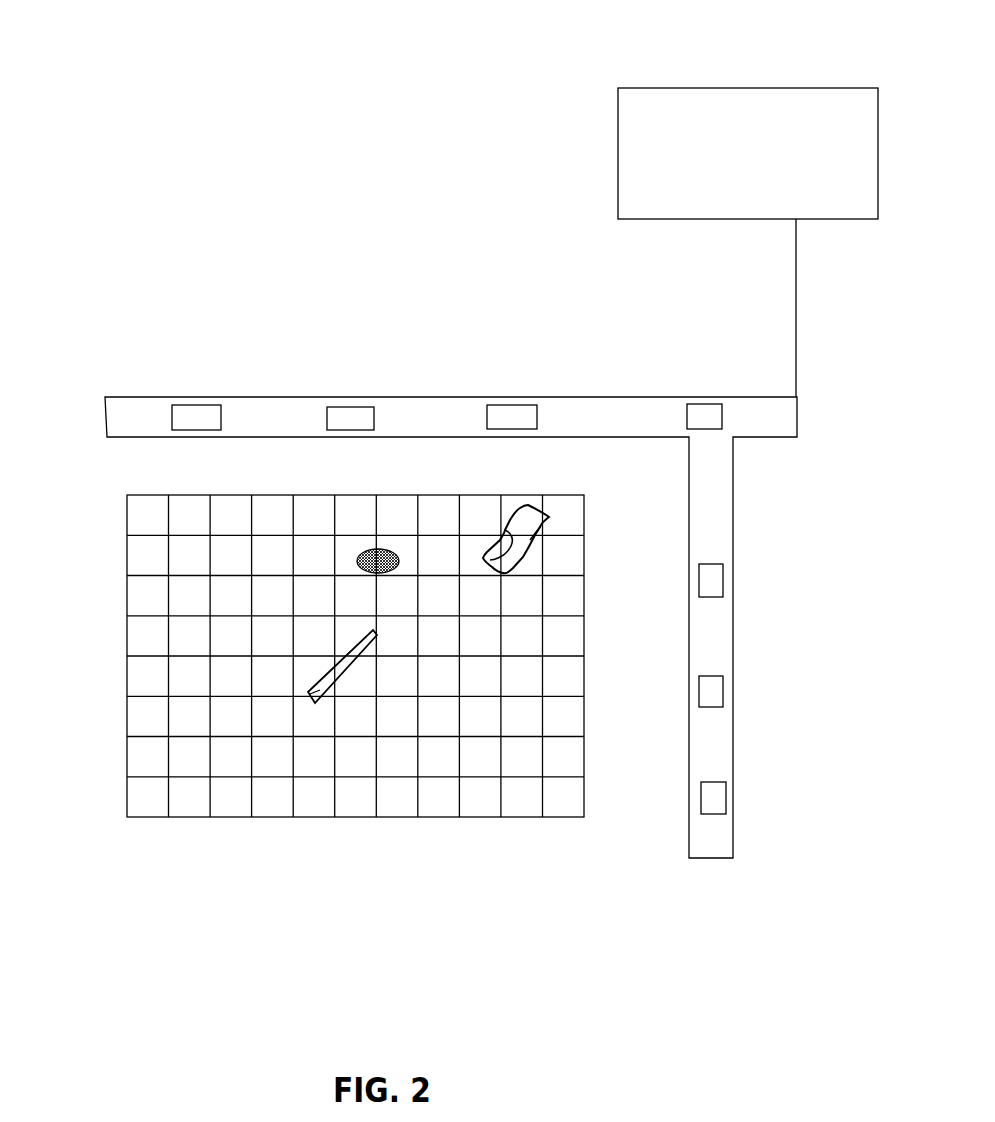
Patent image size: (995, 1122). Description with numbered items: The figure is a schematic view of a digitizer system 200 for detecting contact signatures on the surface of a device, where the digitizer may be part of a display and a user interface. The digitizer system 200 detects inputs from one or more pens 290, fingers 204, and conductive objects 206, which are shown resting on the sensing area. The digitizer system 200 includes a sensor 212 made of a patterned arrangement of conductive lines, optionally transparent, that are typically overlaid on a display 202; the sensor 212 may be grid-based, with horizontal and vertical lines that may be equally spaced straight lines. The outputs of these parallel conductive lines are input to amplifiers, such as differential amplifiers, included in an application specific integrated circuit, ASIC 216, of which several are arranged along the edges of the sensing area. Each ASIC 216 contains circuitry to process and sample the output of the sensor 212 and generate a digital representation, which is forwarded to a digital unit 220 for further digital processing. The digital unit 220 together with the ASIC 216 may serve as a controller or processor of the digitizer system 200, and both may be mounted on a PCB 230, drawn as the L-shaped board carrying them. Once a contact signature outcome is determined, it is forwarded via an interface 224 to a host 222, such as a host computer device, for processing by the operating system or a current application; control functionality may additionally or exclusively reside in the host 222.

The digitizer system 200 is at (152, 53).
The display 202 is at (336, 679).
The finger 204 is at (520, 545).
The conductive object 206 is at (357, 562).
The sensor 212 is at (157, 823).
The application specific integrated circuit (ASIC) 216 is at (186, 402).
The digital unit 220 is at (722, 417).
The host 222 is at (643, 172).
The interface 224 is at (797, 296).
The PCB 230 is at (293, 400).
The pen 290 is at (332, 679).